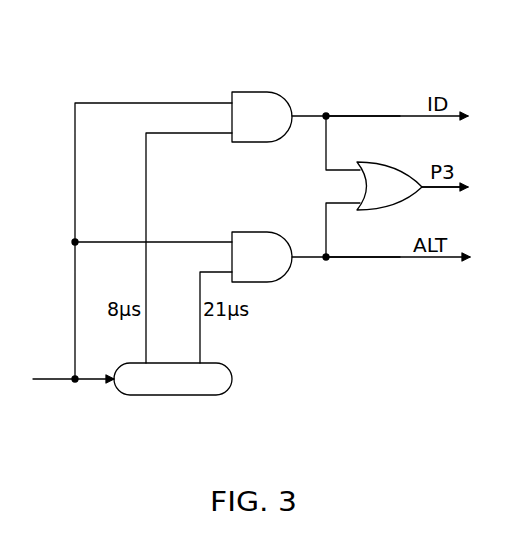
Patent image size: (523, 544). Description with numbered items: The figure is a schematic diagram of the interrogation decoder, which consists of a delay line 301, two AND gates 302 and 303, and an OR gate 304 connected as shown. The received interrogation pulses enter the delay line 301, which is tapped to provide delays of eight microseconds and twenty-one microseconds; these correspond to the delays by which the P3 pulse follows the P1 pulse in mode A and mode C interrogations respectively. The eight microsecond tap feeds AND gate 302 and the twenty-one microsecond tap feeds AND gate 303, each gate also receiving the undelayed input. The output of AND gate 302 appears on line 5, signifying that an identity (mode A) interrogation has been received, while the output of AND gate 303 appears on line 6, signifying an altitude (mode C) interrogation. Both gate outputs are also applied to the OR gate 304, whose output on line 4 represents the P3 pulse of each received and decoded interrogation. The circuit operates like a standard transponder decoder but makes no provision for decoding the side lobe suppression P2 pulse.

The delay line 301 is at (168, 395).
The AND gate 302 is at (255, 92).
The AND gate 303 is at (258, 232).
The OR gate 304 is at (381, 162).
The line 5 is at (345, 114).
The line 4 is at (441, 189).
The line 6 is at (361, 259).